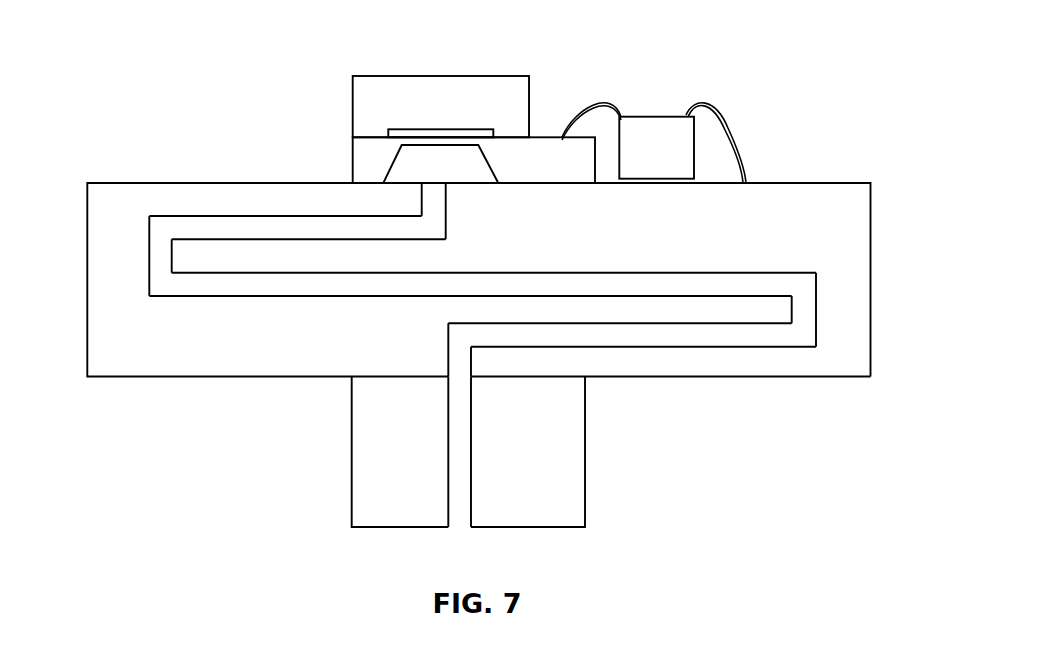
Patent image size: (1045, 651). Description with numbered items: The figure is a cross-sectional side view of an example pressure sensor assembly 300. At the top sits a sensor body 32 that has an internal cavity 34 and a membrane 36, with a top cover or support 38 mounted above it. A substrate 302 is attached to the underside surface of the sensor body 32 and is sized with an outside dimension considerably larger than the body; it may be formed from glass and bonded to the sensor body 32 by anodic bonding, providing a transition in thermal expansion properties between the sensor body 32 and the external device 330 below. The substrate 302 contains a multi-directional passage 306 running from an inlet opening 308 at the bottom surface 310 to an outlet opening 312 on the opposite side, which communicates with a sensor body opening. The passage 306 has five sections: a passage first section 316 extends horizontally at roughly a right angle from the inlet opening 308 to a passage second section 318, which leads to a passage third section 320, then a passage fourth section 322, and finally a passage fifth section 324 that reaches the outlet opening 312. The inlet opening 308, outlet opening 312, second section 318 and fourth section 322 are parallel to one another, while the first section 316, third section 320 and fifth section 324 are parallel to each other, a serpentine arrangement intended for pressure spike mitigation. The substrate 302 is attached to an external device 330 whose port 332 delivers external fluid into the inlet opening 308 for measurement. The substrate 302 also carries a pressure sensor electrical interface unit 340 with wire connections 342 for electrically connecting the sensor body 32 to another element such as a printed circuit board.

The pressure sensor assembly 300 is at (697, 56).
The substrate 302 is at (94, 237).
The multi-directional passage 306 is at (795, 286).
The inlet opening 308 is at (460, 368).
The bottom surface 310 is at (612, 377).
The outlet opening 312 is at (435, 209).
The passage first section 316 is at (687, 337).
The passage second section 318 is at (803, 313).
The passage third section 320 is at (297, 286).
The passage fourth section 322 is at (162, 262).
The passage fifth section 324 is at (246, 230).
The external device 330 is at (367, 476).
The port 332 is at (460, 513).
The sensor body 32 is at (365, 163).
The internal cavity 34 is at (460, 166).
The membrane 36 is at (440, 138).
The top cover or support 38 is at (482, 97).
The pressure sensor electrical interface unit 340 is at (650, 132).
The wire connections 342 is at (605, 102).